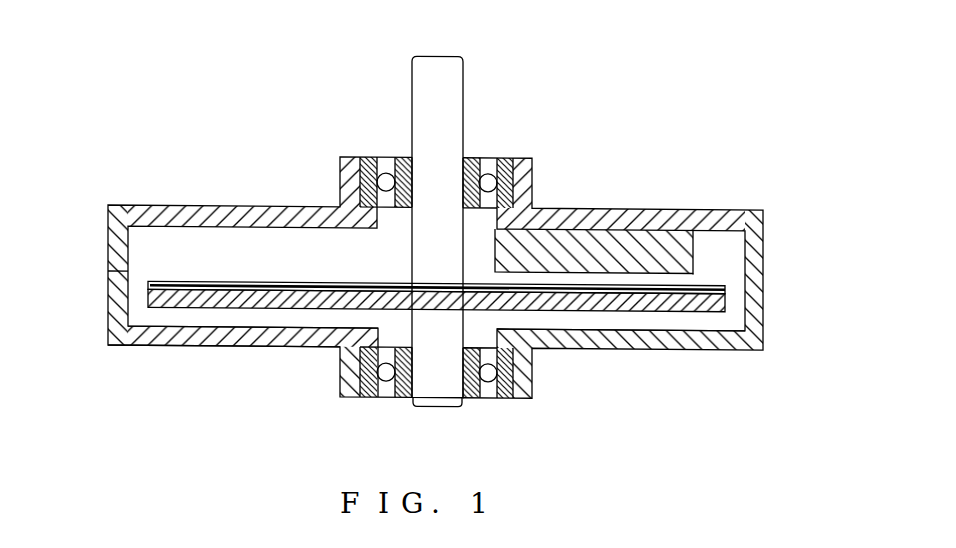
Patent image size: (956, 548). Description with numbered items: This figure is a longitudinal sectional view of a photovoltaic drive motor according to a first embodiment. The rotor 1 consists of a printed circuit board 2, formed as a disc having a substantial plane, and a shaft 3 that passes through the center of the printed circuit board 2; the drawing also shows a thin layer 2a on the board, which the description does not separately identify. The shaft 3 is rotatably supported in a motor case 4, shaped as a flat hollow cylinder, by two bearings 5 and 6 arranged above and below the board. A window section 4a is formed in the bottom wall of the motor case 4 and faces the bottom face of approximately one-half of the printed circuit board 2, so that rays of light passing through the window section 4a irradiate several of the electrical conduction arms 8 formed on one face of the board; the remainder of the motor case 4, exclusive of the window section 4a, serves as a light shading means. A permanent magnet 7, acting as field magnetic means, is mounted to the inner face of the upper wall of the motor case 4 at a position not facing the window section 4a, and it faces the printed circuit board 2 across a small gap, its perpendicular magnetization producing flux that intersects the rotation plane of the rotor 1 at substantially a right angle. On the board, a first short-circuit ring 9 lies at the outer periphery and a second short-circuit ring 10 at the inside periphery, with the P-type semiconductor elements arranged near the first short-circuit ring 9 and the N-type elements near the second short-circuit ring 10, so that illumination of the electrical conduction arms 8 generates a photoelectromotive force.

The rotor 1 is at (205, 266).
The printed circuit board 2 is at (627, 307).
The surface layer of rotary disk 2a is at (267, 281).
The shaft 3 is at (443, 54).
The motor case 4 is at (713, 205).
The window section 4a is at (160, 329).
The bearing 5 is at (490, 155).
The bearing 6 is at (488, 395).
The permanent magnet 7 is at (693, 248).
The electrical conduction arms 8 is at (695, 284).
The first short-circuit ring 9 is at (157, 283).
The second short-circuit ring 10 is at (530, 307).